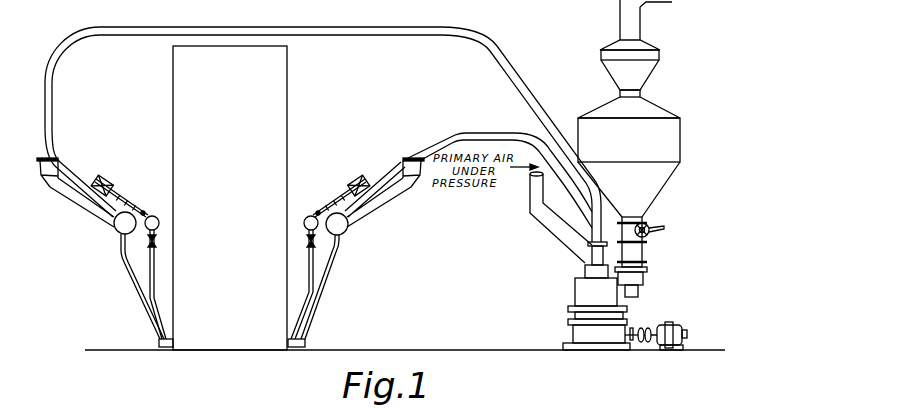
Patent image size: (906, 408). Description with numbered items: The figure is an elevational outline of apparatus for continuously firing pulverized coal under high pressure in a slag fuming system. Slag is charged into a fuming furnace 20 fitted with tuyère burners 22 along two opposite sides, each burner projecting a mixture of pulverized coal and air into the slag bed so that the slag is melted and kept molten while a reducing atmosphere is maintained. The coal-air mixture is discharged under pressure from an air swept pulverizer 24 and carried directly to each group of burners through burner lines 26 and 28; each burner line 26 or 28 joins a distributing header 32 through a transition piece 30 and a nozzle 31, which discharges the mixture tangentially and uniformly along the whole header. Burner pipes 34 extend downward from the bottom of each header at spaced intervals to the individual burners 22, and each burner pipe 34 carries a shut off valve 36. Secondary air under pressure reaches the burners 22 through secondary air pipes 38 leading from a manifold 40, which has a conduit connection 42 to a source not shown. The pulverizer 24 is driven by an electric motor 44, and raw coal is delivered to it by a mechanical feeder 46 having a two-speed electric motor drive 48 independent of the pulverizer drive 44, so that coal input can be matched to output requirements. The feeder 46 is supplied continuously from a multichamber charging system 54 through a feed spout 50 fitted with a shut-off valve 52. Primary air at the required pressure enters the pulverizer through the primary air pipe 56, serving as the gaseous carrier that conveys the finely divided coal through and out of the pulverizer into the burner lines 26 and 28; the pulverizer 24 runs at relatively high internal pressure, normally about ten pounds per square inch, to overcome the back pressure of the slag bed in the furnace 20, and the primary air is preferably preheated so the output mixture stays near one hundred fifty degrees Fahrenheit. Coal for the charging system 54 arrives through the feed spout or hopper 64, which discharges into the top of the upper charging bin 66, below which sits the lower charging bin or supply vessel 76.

The fuming furnace 20 is at (238, 259).
The tuyère burners 22 is at (160, 341).
The air swept pulverizer 24 is at (573, 292).
The burner line 26 is at (465, 131).
The burner line 28 is at (512, 84).
The transition piece 30 is at (113, 192).
The nozzle 31 is at (147, 213).
The distributing header 32 is at (153, 214).
The burner pipes 34 is at (152, 288).
The shut off valve 36 is at (232, 246).
The secondary air pipes 38 is at (128, 272).
The manifold 40 is at (115, 232).
The conduit connection 42 is at (80, 203).
The electric motor 44 is at (668, 322).
The mechanical feeder 46 is at (645, 280).
The two-speed electric motor drive 48 is at (640, 291).
The feed spout 50 is at (643, 250).
The shut-off valve 52 is at (648, 222).
The multichamber charging system 54 is at (666, 104).
The primary air pipe 56 is at (538, 230).
The feed spout or hopper 64 is at (620, 18).
The upper charging bin 66 is at (655, 72).
The lower charging bin 76 is at (682, 140).